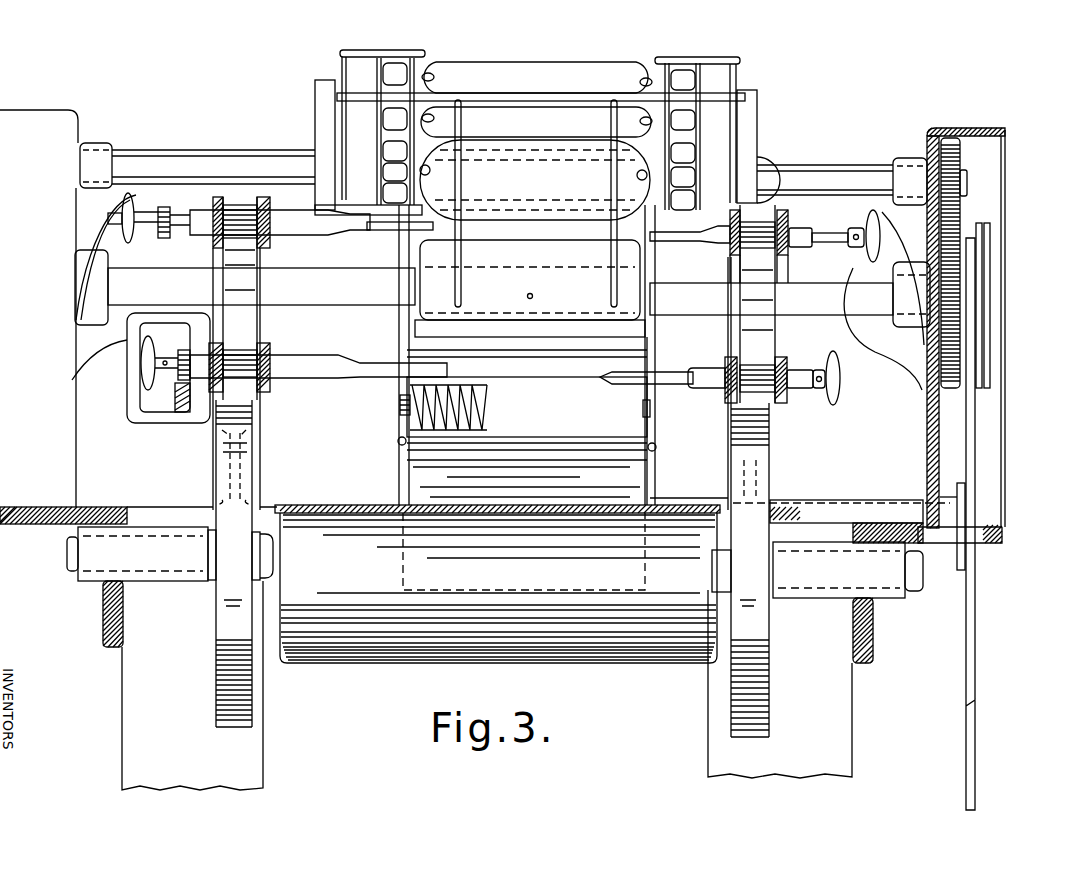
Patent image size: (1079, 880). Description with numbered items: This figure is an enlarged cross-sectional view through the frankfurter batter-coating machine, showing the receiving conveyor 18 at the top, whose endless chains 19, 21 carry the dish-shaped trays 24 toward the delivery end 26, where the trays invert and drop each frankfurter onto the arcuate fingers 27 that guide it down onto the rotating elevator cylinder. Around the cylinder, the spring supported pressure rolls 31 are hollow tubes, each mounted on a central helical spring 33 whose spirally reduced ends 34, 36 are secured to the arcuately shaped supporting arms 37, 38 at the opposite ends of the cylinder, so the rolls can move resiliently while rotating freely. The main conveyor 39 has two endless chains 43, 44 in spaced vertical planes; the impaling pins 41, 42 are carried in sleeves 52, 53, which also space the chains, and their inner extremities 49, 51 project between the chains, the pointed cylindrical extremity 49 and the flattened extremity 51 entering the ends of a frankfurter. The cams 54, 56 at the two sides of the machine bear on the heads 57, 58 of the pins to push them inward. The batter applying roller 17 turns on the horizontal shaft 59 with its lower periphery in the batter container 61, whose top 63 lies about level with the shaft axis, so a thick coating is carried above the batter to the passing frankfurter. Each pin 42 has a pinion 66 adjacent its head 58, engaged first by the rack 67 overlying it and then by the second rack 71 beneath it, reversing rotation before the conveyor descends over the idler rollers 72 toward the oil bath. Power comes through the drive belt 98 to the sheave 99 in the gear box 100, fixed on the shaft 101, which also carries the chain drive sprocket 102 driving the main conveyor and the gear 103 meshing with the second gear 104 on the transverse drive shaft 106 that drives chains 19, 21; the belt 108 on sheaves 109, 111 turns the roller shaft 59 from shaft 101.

The batter applying roller 17 is at (646, 485).
The conveyor 18 is at (498, 51).
The endless chain 19 is at (682, 72).
The endless chain 21 is at (398, 65).
The dish-shaped tray 24 is at (556, 62).
The delivery end 26 is at (690, 155).
The arcuate finger 27 is at (613, 100).
The pressure roll 31 is at (490, 450).
The helical spring 33 is at (436, 424).
The spirally reduced end 34 is at (400, 407).
The spirally reduced end 36 is at (652, 414).
The supporting arm 37 is at (397, 328).
The supporting arm 38 is at (660, 352).
The conveyor 39 is at (730, 274).
The impaling pin 41 is at (842, 236).
The impaling pin 42 is at (348, 228).
The endless chain 43 is at (263, 325).
The endless chain 44 is at (742, 325).
The pointed cylindrical extremity 49 is at (676, 385).
The flattened extremity 51 is at (388, 372).
The sleeve 52 is at (781, 227).
The sleeve 53 is at (213, 207).
The cam 54 is at (893, 222).
The cam 56 is at (112, 215).
The head 57 is at (841, 380).
The head 58 is at (122, 220).
The shaft 59 is at (684, 512).
The batter container 61 is at (382, 520).
The top 63 is at (300, 505).
The pinion 66 is at (165, 236).
The rack 67 is at (190, 330).
The second rack 71 is at (184, 412).
The idler roller 72 is at (216, 646).
The drive belt 98 is at (976, 671).
The sheave 99 is at (991, 320).
The gear box 100 is at (1000, 212).
The shaft 101 is at (283, 283).
The chain drive sprocket 102 is at (250, 334).
The gear 103 is at (960, 258).
The second gear 104 is at (965, 170).
The transverse drive shaft 106 is at (796, 170).
The belt 108 is at (968, 407).
The sheave 109 is at (979, 361).
The sheave 111 is at (966, 500).